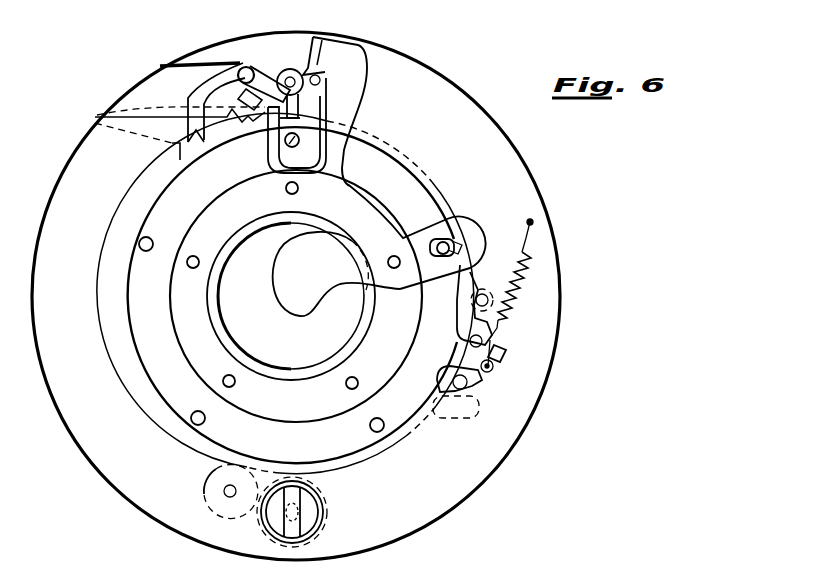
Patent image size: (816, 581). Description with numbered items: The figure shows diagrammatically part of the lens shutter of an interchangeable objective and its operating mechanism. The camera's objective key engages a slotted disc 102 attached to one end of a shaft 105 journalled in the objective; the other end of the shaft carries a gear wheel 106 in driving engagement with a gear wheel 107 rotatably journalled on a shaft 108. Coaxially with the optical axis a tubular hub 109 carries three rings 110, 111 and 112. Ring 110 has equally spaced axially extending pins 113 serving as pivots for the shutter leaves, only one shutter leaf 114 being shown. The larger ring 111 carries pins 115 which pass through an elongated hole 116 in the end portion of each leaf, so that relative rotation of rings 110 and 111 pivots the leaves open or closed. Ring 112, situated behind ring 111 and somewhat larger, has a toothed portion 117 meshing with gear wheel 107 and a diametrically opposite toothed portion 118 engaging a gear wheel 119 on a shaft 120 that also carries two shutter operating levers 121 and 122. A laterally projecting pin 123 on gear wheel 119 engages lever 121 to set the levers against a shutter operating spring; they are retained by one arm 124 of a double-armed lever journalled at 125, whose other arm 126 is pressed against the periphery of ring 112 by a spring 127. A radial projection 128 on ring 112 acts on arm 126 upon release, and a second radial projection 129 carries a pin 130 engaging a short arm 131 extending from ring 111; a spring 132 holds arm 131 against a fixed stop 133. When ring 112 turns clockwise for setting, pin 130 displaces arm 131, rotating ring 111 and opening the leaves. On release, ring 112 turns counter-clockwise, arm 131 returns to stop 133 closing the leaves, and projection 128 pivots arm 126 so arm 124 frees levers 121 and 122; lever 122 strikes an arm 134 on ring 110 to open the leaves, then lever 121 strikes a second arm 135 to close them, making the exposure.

The slotted disc 102 is at (312, 512).
The shaft 105 is at (283, 537).
The gear wheel 106 is at (304, 539).
The gear wheel 107 is at (200, 490).
The shaft 108 is at (223, 494).
The tubular hub 109 is at (238, 353).
The ring 110 is at (190, 355).
The ring 111 is at (144, 300).
The ring 112 is at (128, 347).
The pins 113 is at (290, 194).
The shutter leaf 114 is at (336, 274).
The pins 115 is at (447, 244).
The elongated hole 116 is at (463, 246).
The toothed portion 117 is at (340, 463).
The toothed portion 118 is at (376, 135).
The gear wheel 119 is at (276, 63).
The shaft 120 is at (314, 62).
The shutter operating lever 121 is at (302, 88).
The shutter operating lever 122 is at (300, 104).
The pin 123 is at (327, 68).
The arm 124 is at (250, 68).
The pivot 125 is at (243, 68).
The arm 126 is at (197, 96).
The spring 127 is at (205, 63).
The radial projection 128 is at (162, 125).
The radial projection 129 is at (487, 285).
The pin 130 is at (496, 341).
The arm 131 is at (489, 370).
The spring 132 is at (506, 300).
The fixed stop 133 is at (506, 352).
The arm 134 is at (268, 150).
The arm 135 is at (318, 78).